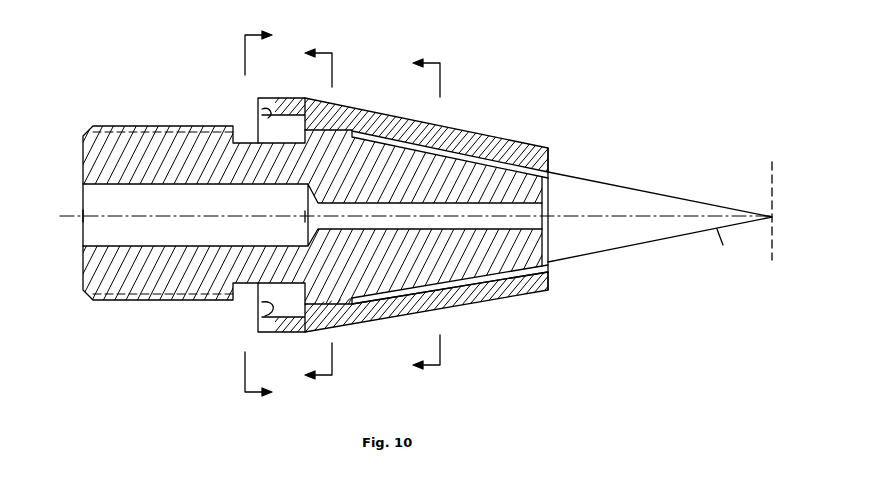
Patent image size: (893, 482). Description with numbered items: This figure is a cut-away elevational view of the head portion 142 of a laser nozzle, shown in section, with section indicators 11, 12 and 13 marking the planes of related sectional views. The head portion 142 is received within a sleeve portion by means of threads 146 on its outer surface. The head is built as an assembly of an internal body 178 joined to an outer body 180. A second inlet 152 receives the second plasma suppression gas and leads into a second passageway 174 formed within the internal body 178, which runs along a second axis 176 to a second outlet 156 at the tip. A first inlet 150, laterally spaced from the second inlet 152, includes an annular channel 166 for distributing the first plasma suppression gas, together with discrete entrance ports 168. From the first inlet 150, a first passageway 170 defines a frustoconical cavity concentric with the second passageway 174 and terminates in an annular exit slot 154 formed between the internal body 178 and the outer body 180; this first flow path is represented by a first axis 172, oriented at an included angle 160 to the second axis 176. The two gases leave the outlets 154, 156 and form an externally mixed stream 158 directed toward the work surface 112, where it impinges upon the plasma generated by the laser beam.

The head portion 142 is at (156, 31).
The threads 146 is at (165, 126).
The internal body 178 is at (183, 161).
The second inlet 152 is at (305, 220).
The channel 166 is at (265, 118).
The entrance ports 168 is at (287, 118).
The first inlet 150 is at (262, 118).
The outer body 180 is at (355, 117).
The first passageway 170 is at (352, 296).
The exit slot 154 is at (503, 163).
The second passageway 174 is at (440, 207).
The second outlet 156 is at (513, 217).
The externally mixed stream 158 is at (686, 162).
The second axis 176 is at (417, 217).
The included angle 160 is at (719, 203).
The first axis 172 is at (645, 243).
The work surface 112 is at (771, 254).
The section line 11 is at (268, 214).
The section line 12 is at (307, 214).
The section line 13 is at (416, 214).